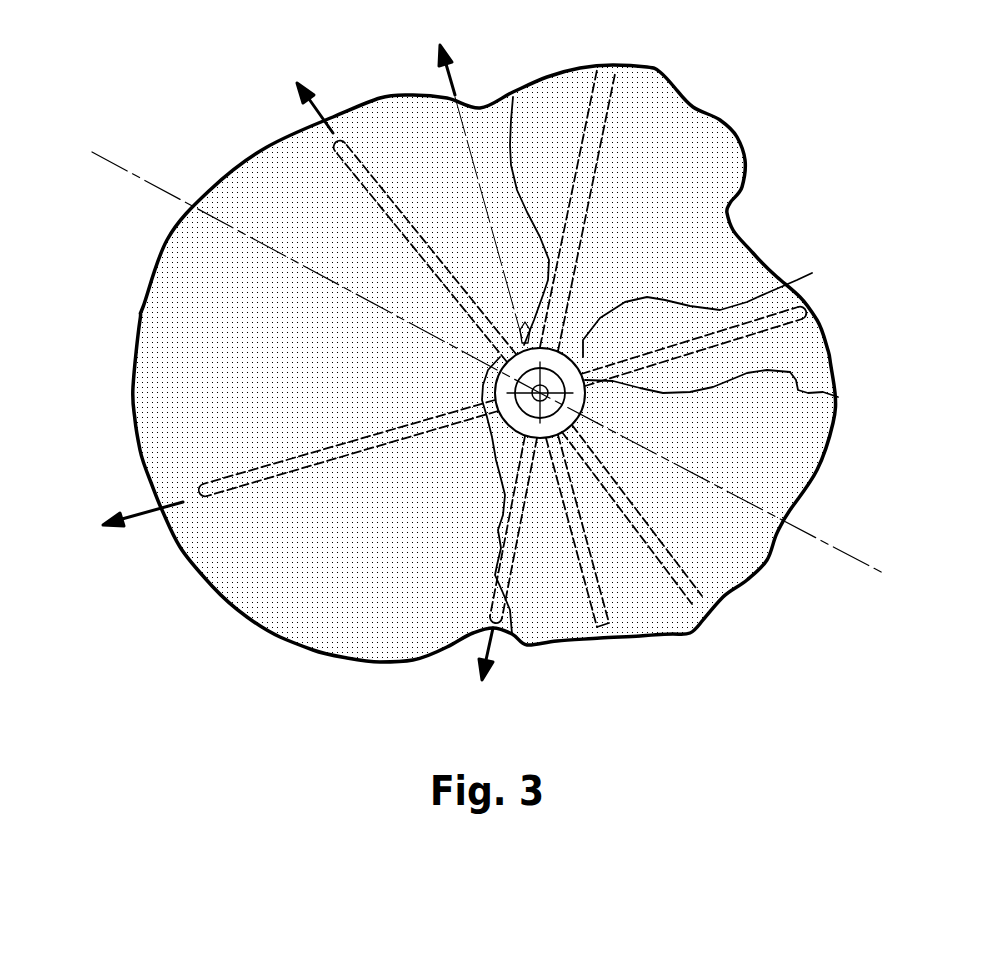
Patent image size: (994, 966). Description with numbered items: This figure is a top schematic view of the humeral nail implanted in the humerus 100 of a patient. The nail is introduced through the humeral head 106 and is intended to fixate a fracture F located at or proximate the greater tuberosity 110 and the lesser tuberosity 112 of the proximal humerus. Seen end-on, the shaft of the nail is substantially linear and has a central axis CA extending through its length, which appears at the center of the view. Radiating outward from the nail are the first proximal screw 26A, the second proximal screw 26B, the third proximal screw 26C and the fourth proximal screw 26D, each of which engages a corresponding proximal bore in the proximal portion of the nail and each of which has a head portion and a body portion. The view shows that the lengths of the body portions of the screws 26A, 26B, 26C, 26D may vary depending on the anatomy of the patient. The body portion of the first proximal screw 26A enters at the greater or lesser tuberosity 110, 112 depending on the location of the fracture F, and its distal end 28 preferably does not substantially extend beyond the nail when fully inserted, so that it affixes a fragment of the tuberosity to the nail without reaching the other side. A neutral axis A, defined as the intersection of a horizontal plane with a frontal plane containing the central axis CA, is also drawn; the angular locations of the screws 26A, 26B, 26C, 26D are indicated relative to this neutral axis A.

The humerus 100 is at (153, 264).
The humeral head 106 is at (190, 370).
The greater tuberosity 110 is at (766, 559).
The lesser tuberosity 112 is at (748, 172).
The first proximal screw 26A is at (590, 592).
The second proximal screw 26B is at (692, 587).
The third proximal screw 26C is at (593, 123).
The fourth proximal screw 26D is at (252, 487).
The distal end 28 is at (513, 95).
The central axis CA is at (540, 393).
The fracture F is at (838, 397).
The neutral axis A is at (858, 563).